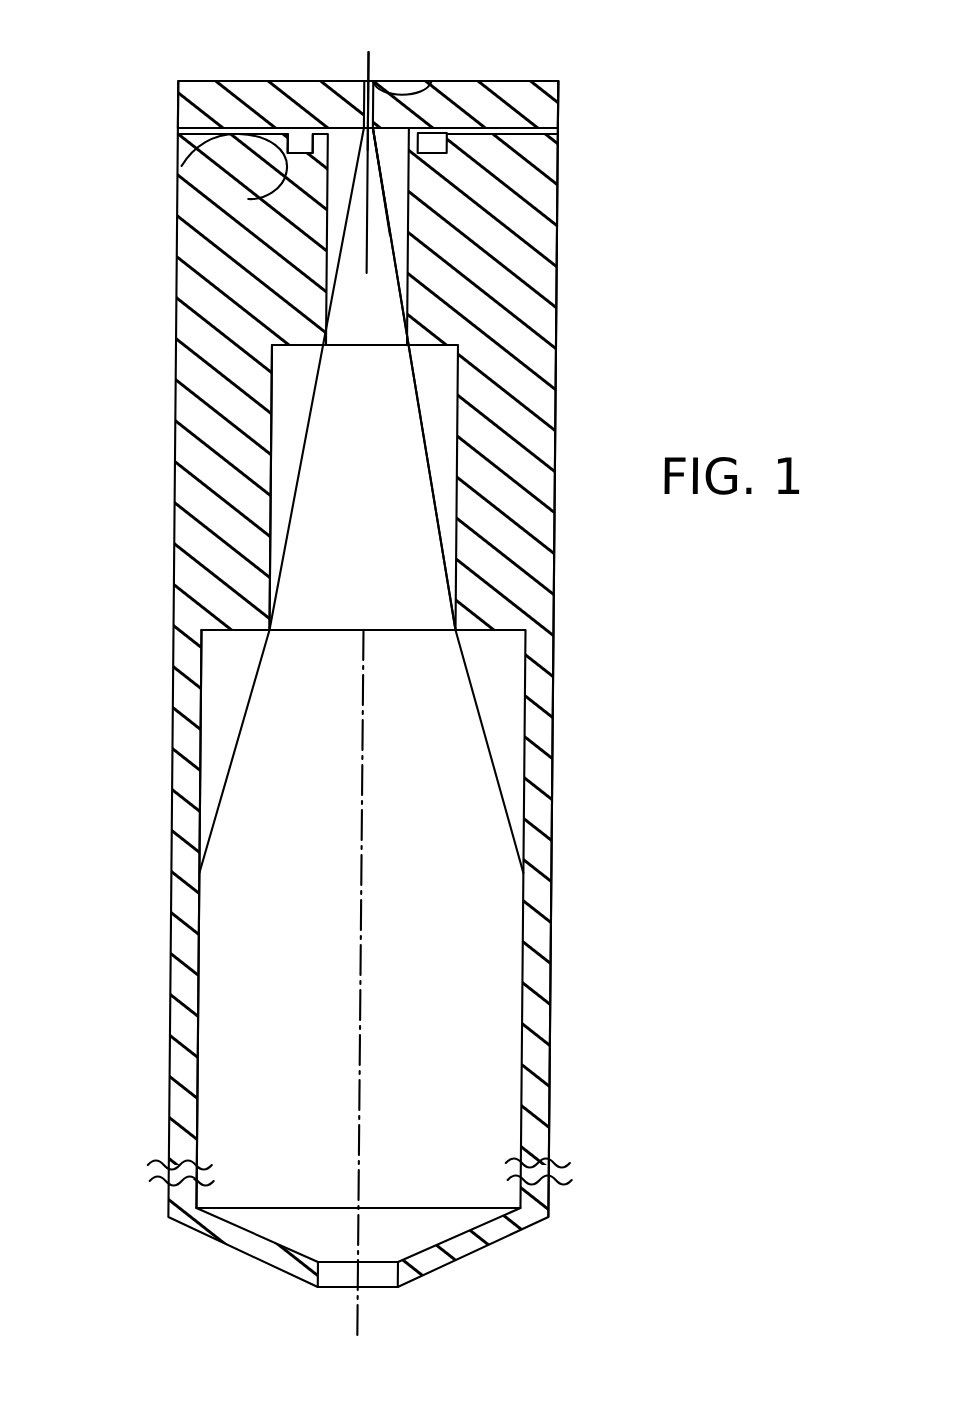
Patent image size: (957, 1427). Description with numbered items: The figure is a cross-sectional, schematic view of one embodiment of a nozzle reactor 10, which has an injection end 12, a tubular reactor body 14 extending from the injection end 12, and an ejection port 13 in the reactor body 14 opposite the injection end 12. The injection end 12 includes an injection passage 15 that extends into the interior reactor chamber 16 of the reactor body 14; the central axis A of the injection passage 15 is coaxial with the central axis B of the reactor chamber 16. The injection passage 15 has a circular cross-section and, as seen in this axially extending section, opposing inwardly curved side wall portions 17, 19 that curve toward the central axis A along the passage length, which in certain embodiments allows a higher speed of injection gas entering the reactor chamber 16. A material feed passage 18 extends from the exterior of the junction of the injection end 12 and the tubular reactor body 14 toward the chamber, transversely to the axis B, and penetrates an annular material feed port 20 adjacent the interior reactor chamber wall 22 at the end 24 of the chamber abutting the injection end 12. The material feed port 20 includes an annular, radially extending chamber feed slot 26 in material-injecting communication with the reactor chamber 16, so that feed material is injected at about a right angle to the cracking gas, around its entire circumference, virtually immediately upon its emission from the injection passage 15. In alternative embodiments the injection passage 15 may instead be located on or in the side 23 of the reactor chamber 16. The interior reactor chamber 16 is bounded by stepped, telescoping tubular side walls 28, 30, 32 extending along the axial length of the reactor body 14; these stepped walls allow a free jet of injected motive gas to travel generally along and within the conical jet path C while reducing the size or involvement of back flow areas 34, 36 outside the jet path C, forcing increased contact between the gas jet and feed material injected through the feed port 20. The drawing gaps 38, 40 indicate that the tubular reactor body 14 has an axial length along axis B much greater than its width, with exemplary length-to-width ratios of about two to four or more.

The nozzle reactor 10 is at (378, 675).
The injection end 12 is at (439, 96).
The ejection port 13 is at (391, 1288).
The tubular reactor body 14 is at (558, 588).
The injection passage 15 is at (358, 107).
The interior reactor chamber 16 is at (456, 913).
The inwardly curved side wall portion 17 is at (362, 100).
The material feed passage 18 is at (183, 166).
The inwardly curved side wall portion 19 is at (431, 84).
The annular material feed port 20 is at (259, 199).
The interior reactor chamber wall 22 is at (413, 189).
The side of the reactor chamber 23 is at (557, 173).
The end of the interior reactor chamber 24 is at (430, 138).
The chamber feed slot 26 is at (405, 126).
The tubular side wall 28 is at (331, 313).
The tubular side wall 30 is at (273, 469).
The tubular side wall 32 is at (212, 690).
The back flow area 34 is at (441, 406).
The back flow area 36 is at (218, 752).
The drawing gap 38 is at (166, 1172).
The drawing gap 40 is at (574, 1166).
The central axis of the injection passage A is at (366, 78).
The central axis of the reactor chamber B is at (370, 1085).
The conical jet path C is at (442, 520).